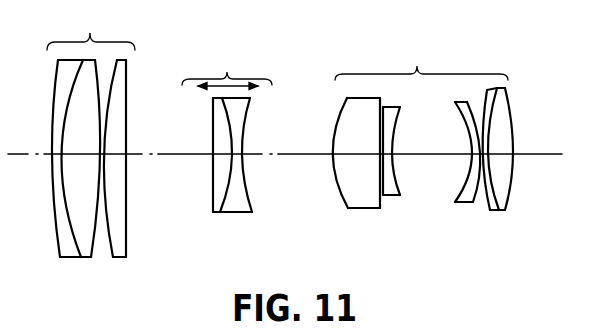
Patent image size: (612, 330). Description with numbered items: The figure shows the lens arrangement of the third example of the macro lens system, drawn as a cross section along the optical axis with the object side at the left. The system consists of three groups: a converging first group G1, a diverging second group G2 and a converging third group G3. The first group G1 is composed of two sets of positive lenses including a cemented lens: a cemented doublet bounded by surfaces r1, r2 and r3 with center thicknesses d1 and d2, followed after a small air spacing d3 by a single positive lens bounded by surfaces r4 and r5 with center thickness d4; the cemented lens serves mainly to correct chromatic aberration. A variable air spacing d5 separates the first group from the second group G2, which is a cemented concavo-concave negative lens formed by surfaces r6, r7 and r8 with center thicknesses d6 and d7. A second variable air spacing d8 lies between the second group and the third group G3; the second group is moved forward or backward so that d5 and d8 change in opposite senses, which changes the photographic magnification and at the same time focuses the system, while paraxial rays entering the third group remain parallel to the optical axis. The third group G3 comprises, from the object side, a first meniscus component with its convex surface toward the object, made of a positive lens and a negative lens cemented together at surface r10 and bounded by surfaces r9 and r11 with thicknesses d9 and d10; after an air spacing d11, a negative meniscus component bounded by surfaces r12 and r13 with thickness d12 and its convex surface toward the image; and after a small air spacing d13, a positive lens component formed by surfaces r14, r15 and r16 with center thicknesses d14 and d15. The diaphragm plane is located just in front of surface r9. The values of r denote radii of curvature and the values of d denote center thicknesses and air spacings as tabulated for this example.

The center thickness of first lens d1 is at (55, 152).
The center thickness of second lens d2 is at (79, 158).
The air spacing d3 is at (99, 161).
The center thickness of third lens d4 is at (112, 154).
The variable air spacing d5 is at (169, 142).
The center thickness of fourth lens d6 is at (219, 158).
The center thickness of fifth lens d7 is at (246, 162).
The variable air spacing d8 is at (287, 142).
The center thickness of sixth lens d9 is at (356, 153).
The center thickness of seventh lens d10 is at (383, 157).
The air spacing d11 is at (432, 142).
The center thickness of eighth lens d12 is at (470, 162).
The air spacing d13 is at (483, 153).
The center thickness of ninth lens d14 is at (487, 152).
The center thickness of tenth lens d15 is at (502, 150).
The first lens surface r1 is at (58, 250).
The second lens surface r2 is at (80, 255).
The third lens surface r3 is at (89, 248).
The fourth lens surface r4 is at (112, 257).
The fifth lens surface r5 is at (128, 248).
The sixth lens surface r6 is at (215, 210).
The seventh lens surface r7 is at (220, 213).
The eighth lens surface r8 is at (246, 214).
The ninth lens surface r9 is at (345, 205).
The tenth lens surface r10 is at (373, 204).
The eleventh lens surface r11 is at (395, 198).
The twelfth lens surface r12 is at (455, 202).
The thirteenth lens surface r13 is at (475, 205).
The fourteenth lens surface r14 is at (491, 211).
The fifteenth lens surface r15 is at (507, 210).
The sixteenth lens surface r16 is at (513, 203).
The converging first group G1 is at (91, 29).
The diverging second group G2 is at (227, 65).
The converging third group G3 is at (421, 59).